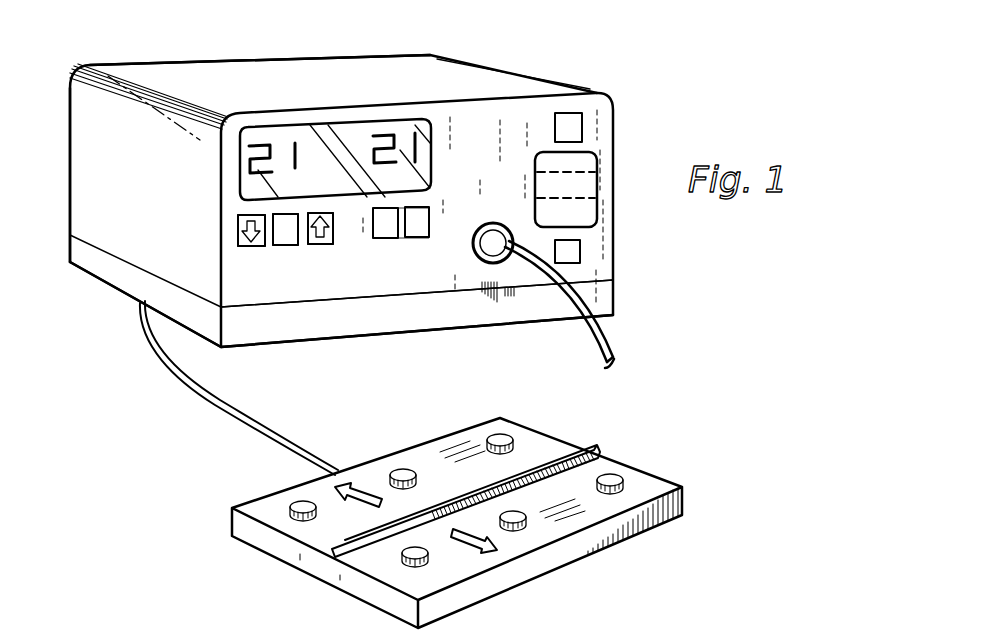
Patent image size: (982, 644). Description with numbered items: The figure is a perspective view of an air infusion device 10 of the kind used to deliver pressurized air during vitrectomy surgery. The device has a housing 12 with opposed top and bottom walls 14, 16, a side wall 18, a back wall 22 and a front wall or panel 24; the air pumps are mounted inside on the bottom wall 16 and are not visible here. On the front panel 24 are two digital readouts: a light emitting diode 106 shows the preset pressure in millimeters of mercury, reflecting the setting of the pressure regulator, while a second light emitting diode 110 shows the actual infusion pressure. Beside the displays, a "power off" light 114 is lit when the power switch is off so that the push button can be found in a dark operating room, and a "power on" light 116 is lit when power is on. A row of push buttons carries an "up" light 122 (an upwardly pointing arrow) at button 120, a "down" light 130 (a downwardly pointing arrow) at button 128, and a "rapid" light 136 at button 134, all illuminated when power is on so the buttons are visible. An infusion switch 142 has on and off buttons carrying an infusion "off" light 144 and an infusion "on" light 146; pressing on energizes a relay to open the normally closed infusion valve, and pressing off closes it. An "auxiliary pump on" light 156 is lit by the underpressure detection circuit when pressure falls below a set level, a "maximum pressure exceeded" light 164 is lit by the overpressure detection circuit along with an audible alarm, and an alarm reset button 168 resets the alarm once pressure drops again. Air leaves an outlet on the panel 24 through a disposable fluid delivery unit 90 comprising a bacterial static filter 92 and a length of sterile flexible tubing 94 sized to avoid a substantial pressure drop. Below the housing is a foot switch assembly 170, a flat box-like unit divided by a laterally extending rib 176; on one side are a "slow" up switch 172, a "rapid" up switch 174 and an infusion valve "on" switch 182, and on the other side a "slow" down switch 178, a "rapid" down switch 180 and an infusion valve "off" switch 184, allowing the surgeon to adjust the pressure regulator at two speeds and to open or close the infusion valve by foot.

The air infusion device 10 is at (583, 68).
The housing 12 is at (371, 80).
The top wall 14 is at (210, 68).
The bottom wall 16 is at (328, 342).
The side wall 18 is at (82, 163).
The back wall 22 is at (70, 125).
The front wall or panel 24 is at (450, 274).
The disposable fluid delivery unit 90 is at (612, 352).
The bacterial static filter 92 is at (497, 224).
The sterile flexible tubing 94 is at (587, 333).
The light emitting diode 106 is at (285, 137).
The light emitting diode 110 is at (408, 128).
The "power off" light 114 is at (563, 165).
The "power on" light 116 is at (563, 132).
The increase push button 120 is at (328, 245).
The "up" light 122 is at (320, 228).
The decrease push button 128 is at (240, 233).
The "down" light 130 is at (251, 230).
The rapid push button 134 is at (283, 242).
The "rapid" light 136 is at (285, 229).
The infusion switch 142 is at (433, 200).
The infusion "off" light 144 is at (393, 234).
The infusion "on" light 146 is at (423, 237).
The "auxiliary pump on" light 156 is at (553, 187).
The "maximum pressure exceeded" light 164 is at (572, 215).
The alarm reset button 168 is at (563, 253).
The foot switch assembly 170 is at (664, 478).
The "slow" up switch 172 is at (300, 503).
The "rapid" up switch 174 is at (402, 468).
The laterally extending rib 176 is at (592, 448).
The "slow" down switch 178 is at (403, 557).
The "rapid" down switch 180 is at (513, 523).
The infusion valve "on" switch 182 is at (498, 433).
The infusion valve "off" switch 184 is at (615, 475).